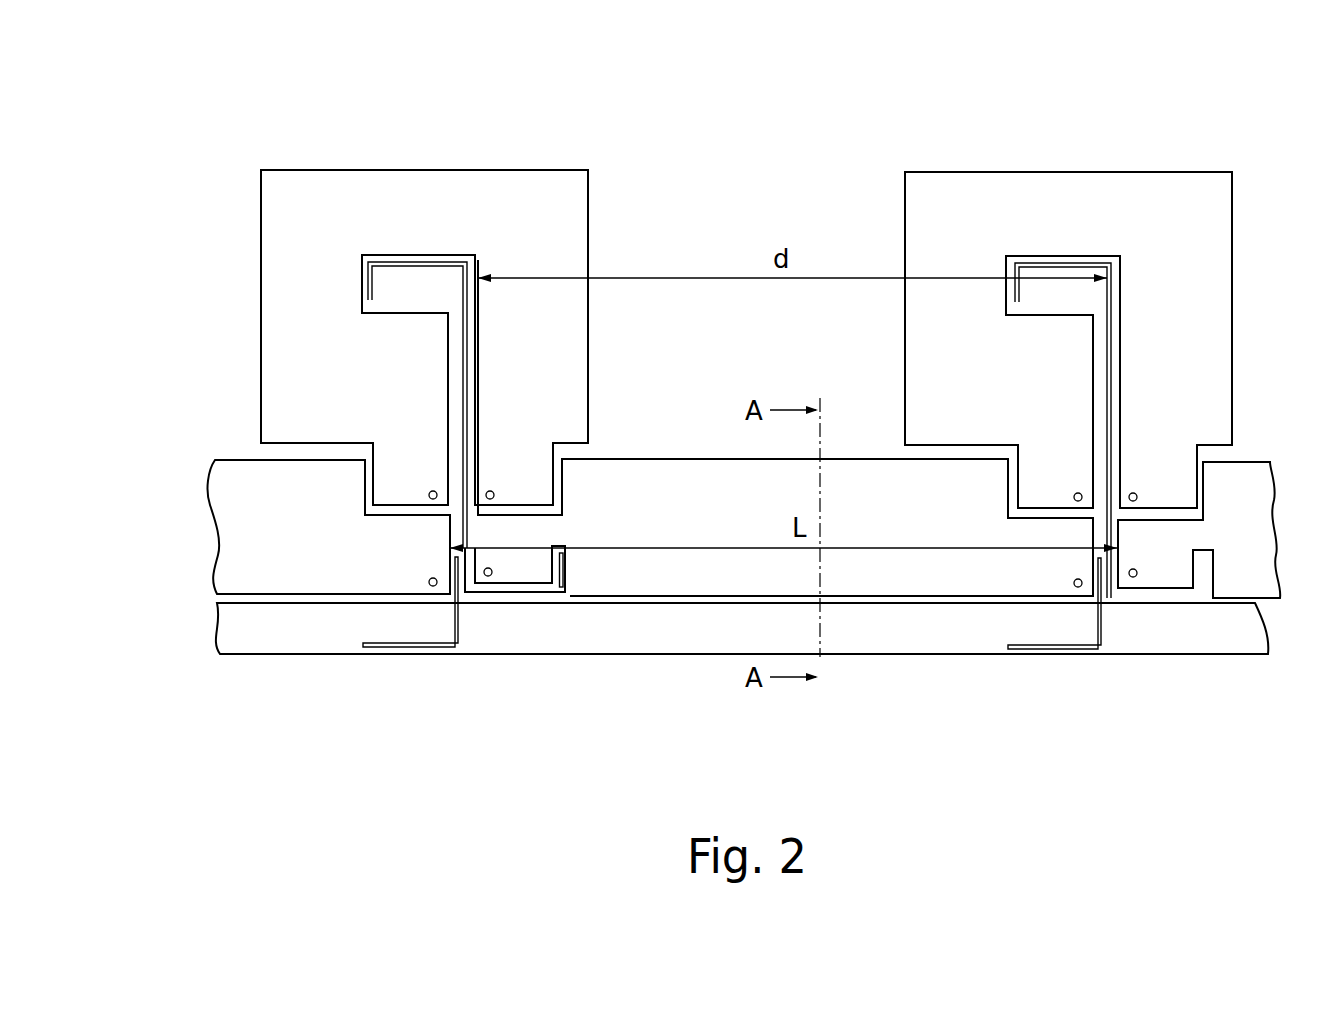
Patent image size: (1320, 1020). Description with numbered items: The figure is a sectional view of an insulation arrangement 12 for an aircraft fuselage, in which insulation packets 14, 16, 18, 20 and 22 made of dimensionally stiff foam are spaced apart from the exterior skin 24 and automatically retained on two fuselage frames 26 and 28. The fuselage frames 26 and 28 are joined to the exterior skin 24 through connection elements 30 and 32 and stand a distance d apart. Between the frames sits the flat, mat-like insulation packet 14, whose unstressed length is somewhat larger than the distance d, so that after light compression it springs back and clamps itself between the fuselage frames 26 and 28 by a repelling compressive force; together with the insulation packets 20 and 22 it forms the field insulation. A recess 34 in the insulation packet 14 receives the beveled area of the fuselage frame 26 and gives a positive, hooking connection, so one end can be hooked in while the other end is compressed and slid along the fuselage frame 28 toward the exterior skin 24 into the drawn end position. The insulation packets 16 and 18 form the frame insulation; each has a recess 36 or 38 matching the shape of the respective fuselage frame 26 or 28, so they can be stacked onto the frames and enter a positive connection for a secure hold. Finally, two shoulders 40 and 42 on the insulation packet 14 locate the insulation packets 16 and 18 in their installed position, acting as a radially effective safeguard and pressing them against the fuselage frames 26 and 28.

The insulation arrangement 12 is at (787, 100).
The insulation packet 14 is at (887, 589).
The insulation packet 16 is at (537, 321).
The insulation packet 18 is at (978, 377).
The insulation packet 20 is at (316, 553).
The insulation packet 22 is at (1255, 522).
The exterior skin 24 is at (532, 654).
The fuselage frame 26 is at (468, 385).
The fuselage frame 28 is at (1112, 367).
The connection element 30 is at (408, 653).
The connection element 32 is at (1055, 647).
The recess 34 is at (572, 565).
The recess 36 is at (417, 297).
The recess 38 is at (1068, 302).
The shoulder 40 is at (562, 515).
The shoulder 42 is at (1008, 473).